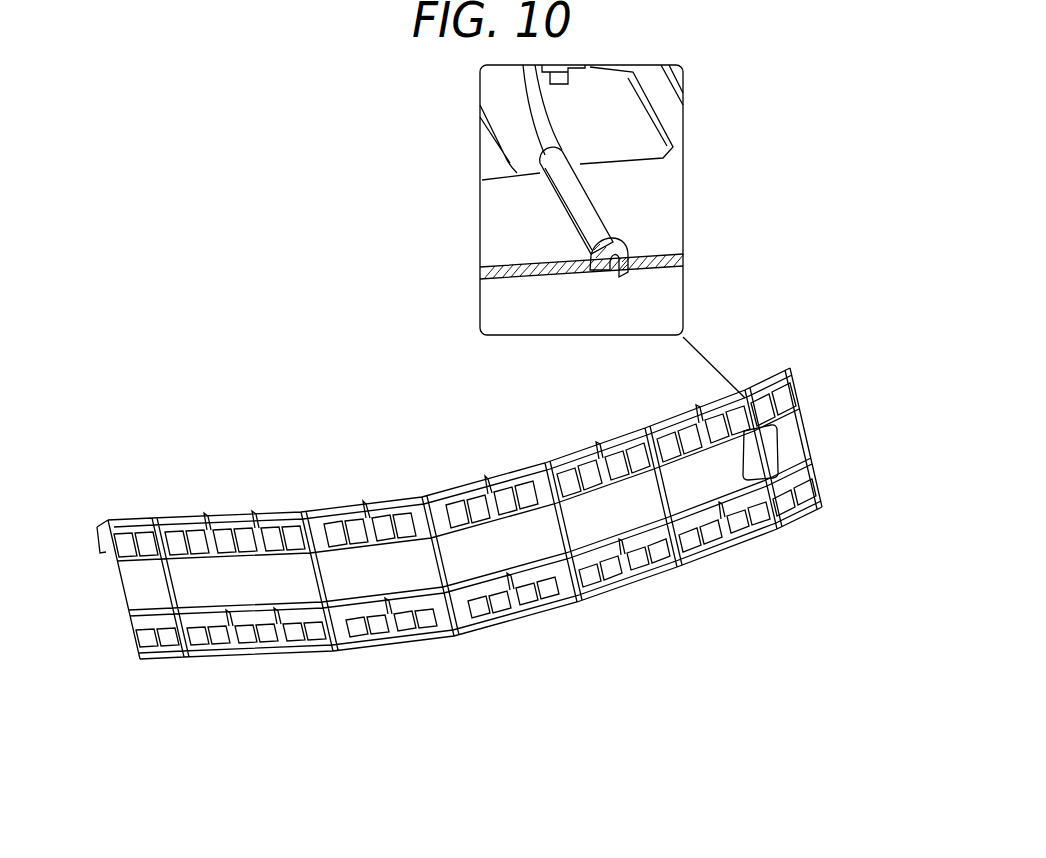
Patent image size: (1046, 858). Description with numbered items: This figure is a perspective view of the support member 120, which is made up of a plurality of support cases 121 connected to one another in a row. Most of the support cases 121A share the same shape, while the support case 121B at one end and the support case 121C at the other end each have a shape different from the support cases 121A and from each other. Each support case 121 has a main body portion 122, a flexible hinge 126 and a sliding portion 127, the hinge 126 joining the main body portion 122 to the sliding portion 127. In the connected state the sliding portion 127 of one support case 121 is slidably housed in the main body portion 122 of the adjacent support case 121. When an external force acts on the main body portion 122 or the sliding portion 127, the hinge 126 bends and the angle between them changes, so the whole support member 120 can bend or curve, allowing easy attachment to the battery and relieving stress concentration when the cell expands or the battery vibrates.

The support member 120 is at (118, 489).
The support case 121 is at (517, 296).
The support case 121A is at (717, 582).
The support case 121B is at (147, 587).
The support case 121C is at (798, 442).
The main body portion 122 is at (510, 222).
The hinge 126 is at (577, 195).
The sliding portion 127 is at (655, 235).